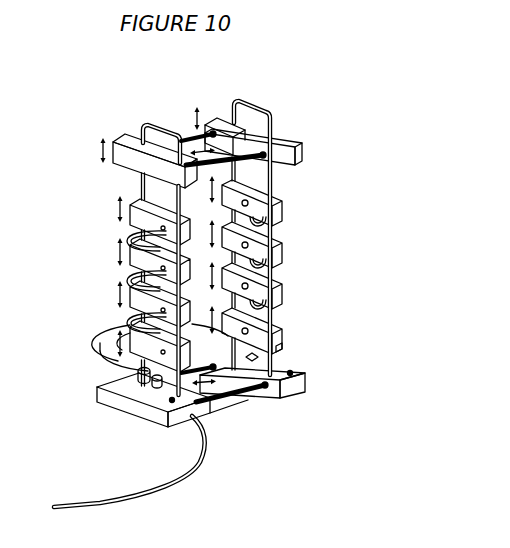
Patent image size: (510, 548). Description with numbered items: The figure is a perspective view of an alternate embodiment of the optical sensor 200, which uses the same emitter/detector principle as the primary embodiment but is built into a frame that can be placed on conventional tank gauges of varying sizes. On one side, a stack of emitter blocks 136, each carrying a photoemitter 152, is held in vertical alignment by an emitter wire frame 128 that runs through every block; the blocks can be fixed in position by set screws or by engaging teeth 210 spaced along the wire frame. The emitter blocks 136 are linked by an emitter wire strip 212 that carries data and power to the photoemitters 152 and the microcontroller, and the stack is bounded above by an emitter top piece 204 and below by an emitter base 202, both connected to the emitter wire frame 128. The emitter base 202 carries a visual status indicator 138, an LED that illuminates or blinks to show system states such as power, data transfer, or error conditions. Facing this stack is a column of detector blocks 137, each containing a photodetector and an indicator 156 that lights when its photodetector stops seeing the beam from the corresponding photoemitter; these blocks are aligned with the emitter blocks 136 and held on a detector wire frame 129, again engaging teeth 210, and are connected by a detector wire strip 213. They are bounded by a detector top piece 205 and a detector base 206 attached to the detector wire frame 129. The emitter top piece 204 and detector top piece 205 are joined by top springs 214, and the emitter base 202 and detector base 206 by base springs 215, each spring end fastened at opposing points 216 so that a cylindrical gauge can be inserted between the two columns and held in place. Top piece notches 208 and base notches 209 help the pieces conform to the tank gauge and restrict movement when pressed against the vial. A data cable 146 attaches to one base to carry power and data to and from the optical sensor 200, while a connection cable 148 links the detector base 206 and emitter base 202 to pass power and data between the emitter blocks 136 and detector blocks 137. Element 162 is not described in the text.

The optical sensor 200 is at (259, 285).
The emitter base 202 is at (308, 390).
The emitter top piece 204 is at (298, 160).
The detector top piece 205 is at (123, 138).
The detector base 206 is at (95, 392).
The top piece notches 208 is at (227, 115).
The base notches 209 is at (240, 408).
The teeth 210 is at (142, 184).
The emitter wire strip 212 is at (283, 225).
The detector wire strip 213 is at (127, 277).
The top spring 214 is at (184, 134).
The base spring 215 is at (223, 408).
The opposing points 216 is at (248, 395).
The emitter wire frame 128 is at (253, 102).
The detector wire frame 129 is at (162, 125).
The emitter block 136 is at (283, 350).
The detector block 137 is at (128, 312).
The visual status indicator 138 is at (160, 416).
The data cable 146 is at (174, 491).
The connection cable 148 is at (107, 345).
The photoemitter 152 is at (283, 330).
The indicator 156 is at (128, 223).
The spacer block 162 is at (285, 297).